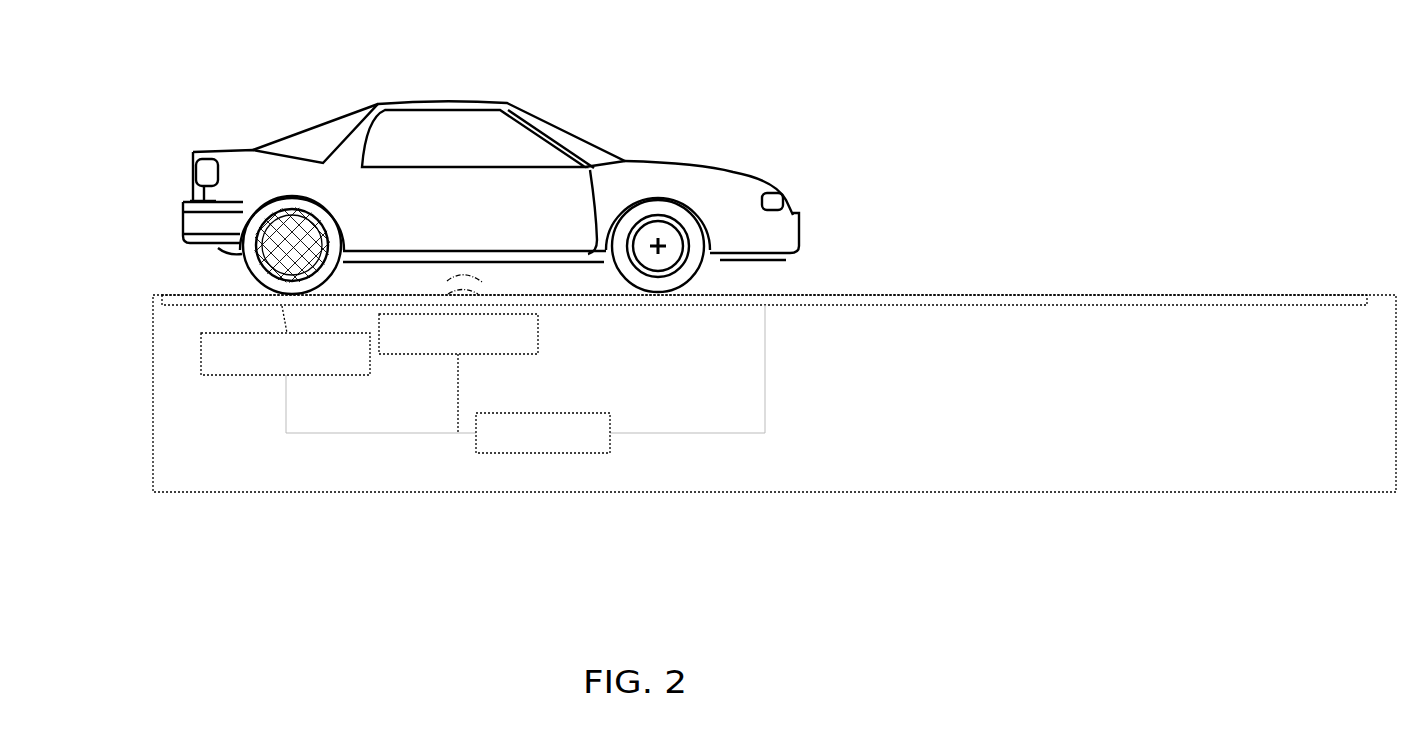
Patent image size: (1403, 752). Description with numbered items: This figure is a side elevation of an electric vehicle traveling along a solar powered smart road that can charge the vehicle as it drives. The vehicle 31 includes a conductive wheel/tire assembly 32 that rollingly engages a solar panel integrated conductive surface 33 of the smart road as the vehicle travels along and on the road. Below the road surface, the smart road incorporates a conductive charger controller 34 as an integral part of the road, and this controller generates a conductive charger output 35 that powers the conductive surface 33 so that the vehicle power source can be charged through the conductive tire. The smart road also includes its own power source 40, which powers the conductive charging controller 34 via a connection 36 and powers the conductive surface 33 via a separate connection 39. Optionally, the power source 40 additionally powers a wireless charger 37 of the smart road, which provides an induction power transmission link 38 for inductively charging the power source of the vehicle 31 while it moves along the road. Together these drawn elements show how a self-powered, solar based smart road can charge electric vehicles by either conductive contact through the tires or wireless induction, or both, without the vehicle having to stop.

The vehicle 31 is at (577, 143).
The conductive wheel/tire assembly 32 is at (287, 210).
The solar panel integrated conductive surface 33 is at (1036, 293).
The conductive charger controller 34 is at (236, 347).
The conductive charger output 35 is at (270, 321).
The connection 36 is at (408, 436).
The wireless charger 37 is at (542, 335).
The induction power transmission link 38 is at (436, 279).
The connection 39 is at (685, 436).
The power source 40 is at (547, 456).